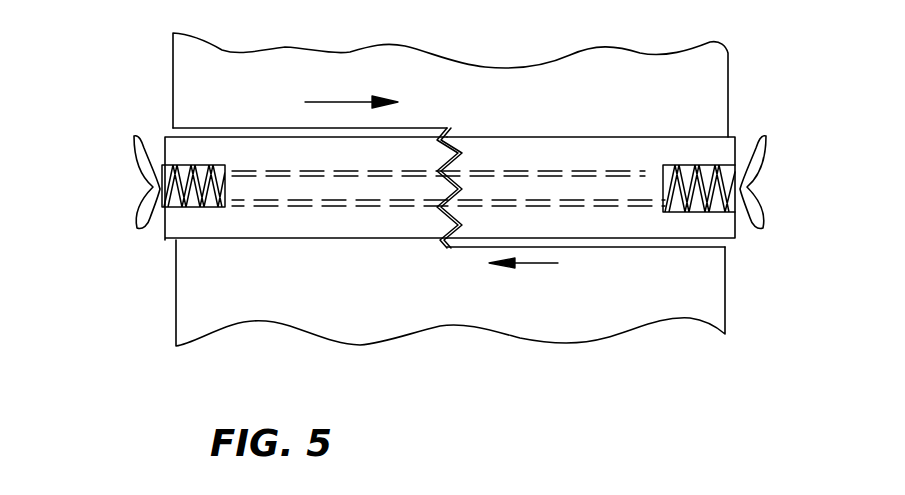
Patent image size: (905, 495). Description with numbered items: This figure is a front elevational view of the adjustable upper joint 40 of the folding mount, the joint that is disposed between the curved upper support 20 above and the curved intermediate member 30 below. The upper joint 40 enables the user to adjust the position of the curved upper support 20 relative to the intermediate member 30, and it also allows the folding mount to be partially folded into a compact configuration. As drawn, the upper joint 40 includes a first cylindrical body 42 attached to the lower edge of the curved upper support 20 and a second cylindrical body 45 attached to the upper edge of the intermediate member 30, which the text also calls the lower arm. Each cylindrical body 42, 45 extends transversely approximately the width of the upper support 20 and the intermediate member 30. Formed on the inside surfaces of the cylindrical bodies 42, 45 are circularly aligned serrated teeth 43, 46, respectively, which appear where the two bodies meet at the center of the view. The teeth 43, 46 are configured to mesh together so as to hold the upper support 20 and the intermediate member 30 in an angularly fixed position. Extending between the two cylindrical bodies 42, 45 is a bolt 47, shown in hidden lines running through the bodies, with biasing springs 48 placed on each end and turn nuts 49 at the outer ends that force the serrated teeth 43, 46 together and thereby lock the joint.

The curved upper support 20 is at (150, 54).
The curved intermediate member 30 is at (150, 292).
The adjustable upper joint 40 is at (130, 117).
The first cylindrical body 42 is at (338, 240).
The serrated teeth 43 is at (441, 246).
The second cylindrical body 45 is at (600, 248).
The serrated teeth 46 is at (447, 128).
The bolt 47 is at (556, 175).
The biasing springs 48 is at (193, 157).
The turn nuts 49 is at (146, 192).